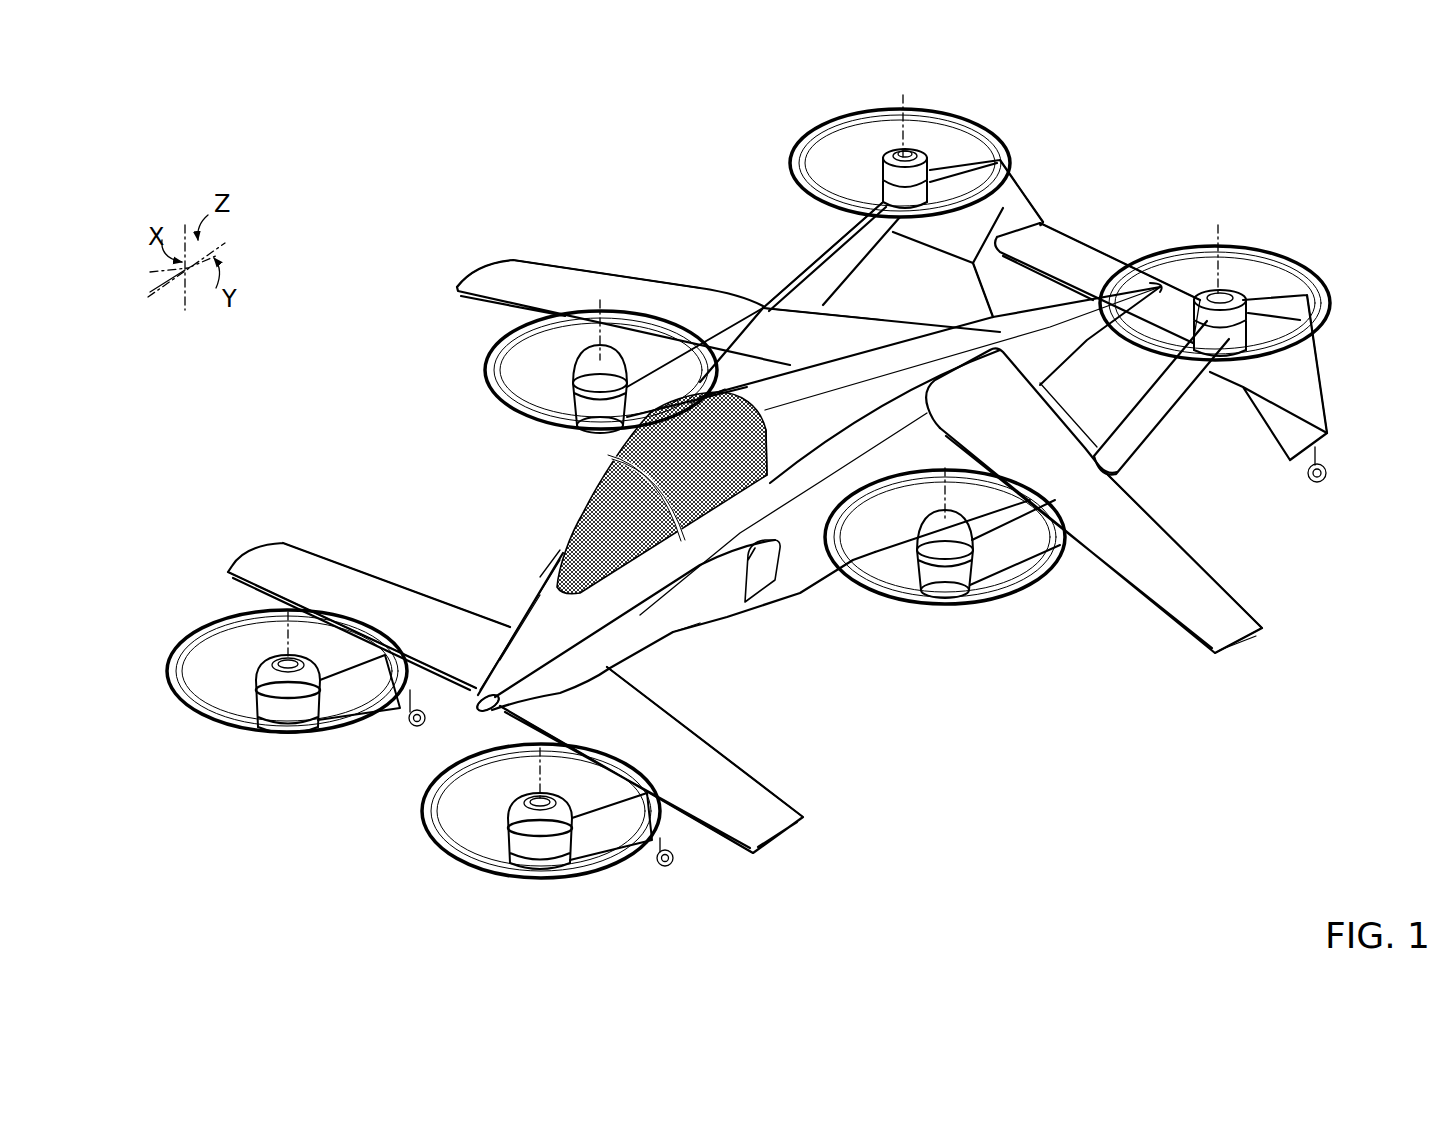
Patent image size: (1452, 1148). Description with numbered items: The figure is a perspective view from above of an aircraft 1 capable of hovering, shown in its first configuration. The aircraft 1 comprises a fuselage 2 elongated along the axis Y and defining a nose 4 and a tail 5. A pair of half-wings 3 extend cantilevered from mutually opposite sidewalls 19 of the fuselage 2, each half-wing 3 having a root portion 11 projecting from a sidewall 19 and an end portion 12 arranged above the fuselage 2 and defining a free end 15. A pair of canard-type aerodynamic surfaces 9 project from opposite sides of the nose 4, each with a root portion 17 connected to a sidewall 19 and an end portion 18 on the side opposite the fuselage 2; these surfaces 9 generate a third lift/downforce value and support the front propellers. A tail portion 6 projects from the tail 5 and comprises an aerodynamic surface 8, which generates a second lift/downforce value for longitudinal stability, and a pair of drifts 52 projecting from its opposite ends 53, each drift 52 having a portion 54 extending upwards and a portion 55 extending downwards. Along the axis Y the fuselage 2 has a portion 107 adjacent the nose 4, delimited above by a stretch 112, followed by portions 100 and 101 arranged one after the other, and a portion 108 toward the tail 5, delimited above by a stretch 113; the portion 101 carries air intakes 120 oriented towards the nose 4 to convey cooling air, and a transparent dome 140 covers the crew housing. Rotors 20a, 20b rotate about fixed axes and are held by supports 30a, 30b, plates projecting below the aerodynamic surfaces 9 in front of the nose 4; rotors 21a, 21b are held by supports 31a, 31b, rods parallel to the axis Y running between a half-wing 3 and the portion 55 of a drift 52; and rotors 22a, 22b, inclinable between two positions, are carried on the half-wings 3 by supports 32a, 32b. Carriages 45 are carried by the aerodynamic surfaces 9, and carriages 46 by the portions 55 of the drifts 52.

The aircraft 1 is at (1207, 135).
The fuselage 2 is at (820, 578).
The half-wings 3 is at (603, 248).
The nose 4 is at (480, 707).
The tail 5 is at (1173, 310).
The tail portion 6 is at (1137, 220).
The aerodynamic surface 8 is at (1077, 262).
The canard-type aerodynamic surfaces 9 is at (348, 585).
The root portions 11 is at (883, 317).
The end portions 12 is at (643, 290).
The free ends 15 is at (487, 265).
The root portions 17 is at (423, 620).
The end portions 18 is at (293, 557).
The sidewalls 19 is at (540, 577).
The rotor 20a is at (283, 750).
The rotor 20b is at (457, 877).
The rotor 21a is at (812, 120).
The rotor 21b is at (1297, 250).
The rotor 22a is at (490, 338).
The rotor 22b is at (1012, 610).
The support 30a is at (353, 700).
The support 30b is at (610, 840).
The support 31a is at (847, 242).
The support 31b is at (1167, 412).
The support 32a is at (660, 355).
The support 32b is at (1027, 543).
The carriages 45 is at (425, 730).
The carriages 46 is at (1325, 474).
The drifts 52 is at (1030, 157).
The ends 53 is at (1023, 222).
The portion 54 is at (1010, 207).
The portion 55 is at (990, 298).
The portion 100 is at (598, 498).
The portion 101 is at (712, 413).
The portion 107 is at (493, 563).
The portion 108 is at (977, 258).
The stretch 112 is at (540, 620).
The stretch 113 is at (845, 245).
The air intakes 120 is at (760, 577).
The transparent dome 140 is at (752, 450).